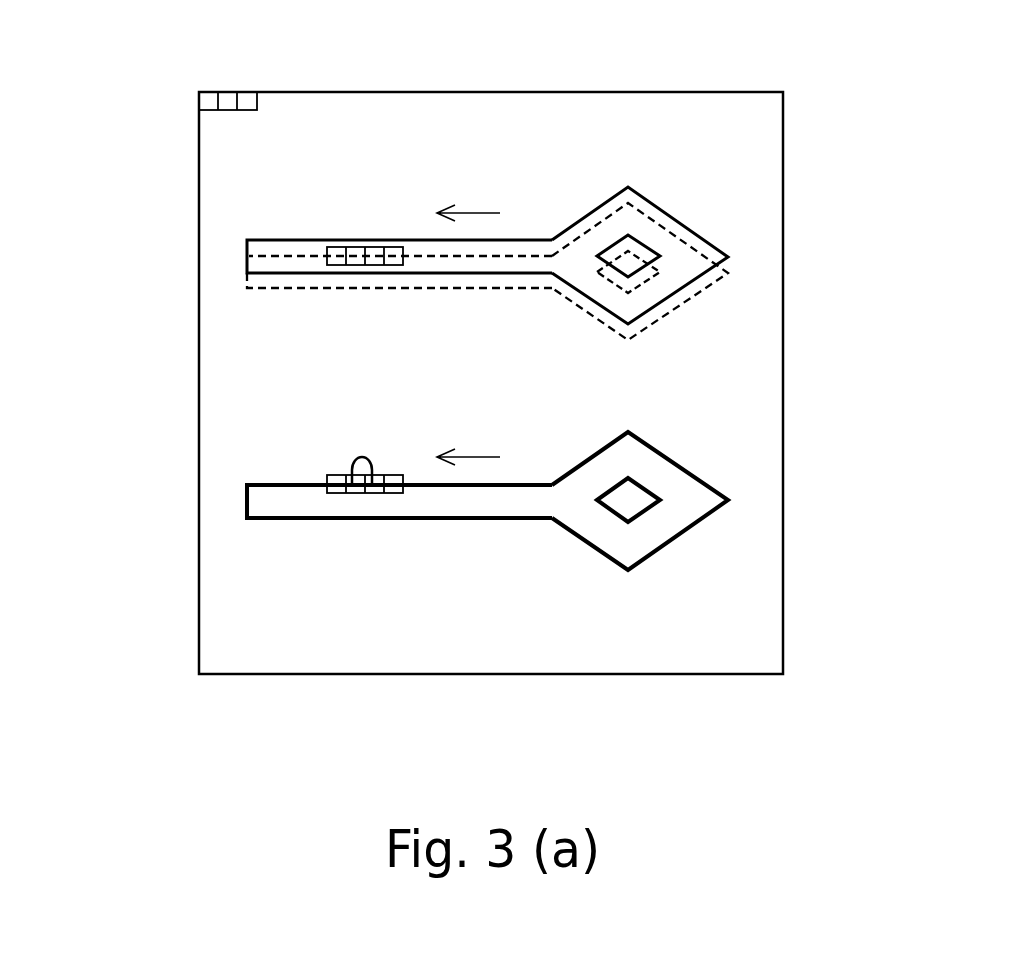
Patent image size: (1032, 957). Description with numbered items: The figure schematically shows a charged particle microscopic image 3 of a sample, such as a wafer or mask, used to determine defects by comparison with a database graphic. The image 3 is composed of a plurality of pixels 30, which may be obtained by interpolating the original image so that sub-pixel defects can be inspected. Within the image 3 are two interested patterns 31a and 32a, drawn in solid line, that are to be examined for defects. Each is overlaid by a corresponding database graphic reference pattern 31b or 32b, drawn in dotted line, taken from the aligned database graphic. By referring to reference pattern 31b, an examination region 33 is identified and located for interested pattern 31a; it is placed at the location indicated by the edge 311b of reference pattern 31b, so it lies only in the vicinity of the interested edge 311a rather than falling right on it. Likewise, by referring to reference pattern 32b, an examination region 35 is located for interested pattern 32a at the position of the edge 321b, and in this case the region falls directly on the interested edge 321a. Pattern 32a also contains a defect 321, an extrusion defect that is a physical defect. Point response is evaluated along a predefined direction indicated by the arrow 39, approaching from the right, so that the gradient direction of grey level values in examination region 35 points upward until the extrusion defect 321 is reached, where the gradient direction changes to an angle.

The charged particle microscopic image 3 is at (592, 91).
The pixel 30 is at (229, 100).
The interested edge 311a is at (267, 239).
The edge of reference pattern 311b is at (290, 257).
The interested pattern 31a is at (683, 223).
The database graphic reference pattern 31b is at (702, 290).
The examination region 33 is at (337, 246).
The arrow 39 is at (489, 334).
The interested edge 321a is at (267, 485).
The edge of reference pattern 321b is at (280, 487).
The interested pattern 32a is at (683, 467).
The database graphic reference pattern 32b is at (707, 520).
The defect 321 is at (355, 458).
The examination region 35 is at (393, 475).